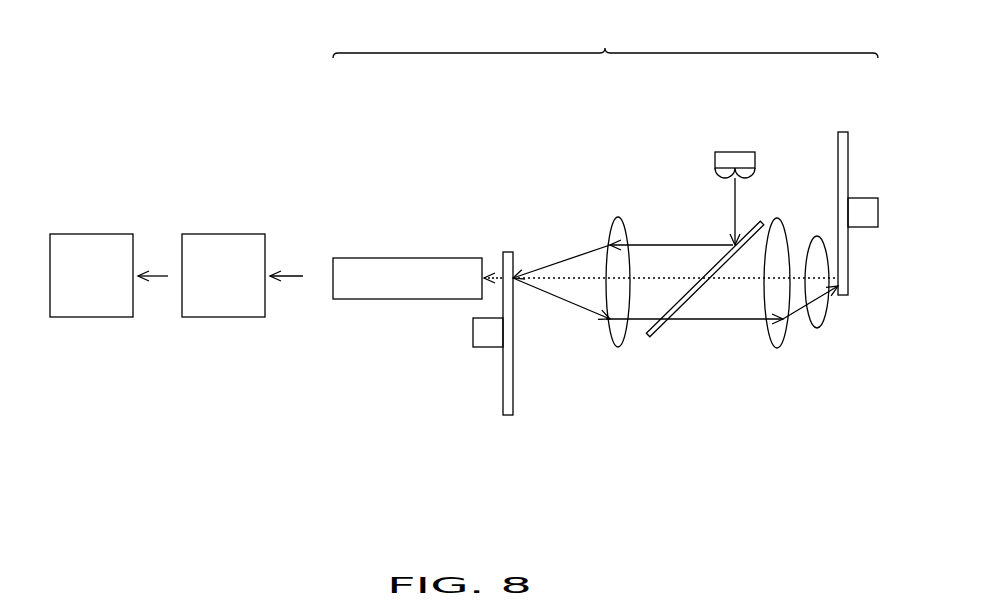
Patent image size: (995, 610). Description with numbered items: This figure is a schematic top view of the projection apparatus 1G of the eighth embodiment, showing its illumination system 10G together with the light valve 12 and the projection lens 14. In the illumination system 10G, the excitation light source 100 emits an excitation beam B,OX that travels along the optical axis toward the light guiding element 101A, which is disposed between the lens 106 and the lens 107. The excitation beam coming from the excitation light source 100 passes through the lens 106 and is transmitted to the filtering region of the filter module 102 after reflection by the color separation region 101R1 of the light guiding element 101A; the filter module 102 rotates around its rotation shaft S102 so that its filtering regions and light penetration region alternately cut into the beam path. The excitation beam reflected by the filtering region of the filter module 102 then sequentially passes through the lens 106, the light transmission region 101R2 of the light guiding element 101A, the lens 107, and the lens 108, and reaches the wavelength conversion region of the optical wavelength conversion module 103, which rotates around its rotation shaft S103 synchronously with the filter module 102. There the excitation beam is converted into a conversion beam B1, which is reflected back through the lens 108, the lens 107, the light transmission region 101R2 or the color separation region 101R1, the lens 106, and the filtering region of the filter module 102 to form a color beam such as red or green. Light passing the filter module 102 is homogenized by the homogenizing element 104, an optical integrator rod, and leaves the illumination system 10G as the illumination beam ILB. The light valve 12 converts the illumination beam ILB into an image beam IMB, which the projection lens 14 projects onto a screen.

The illumination system 10G is at (606, 252).
The projection apparatus 1G is at (787, 480).
The excitation light source 100 is at (735, 150).
The light guiding element 101A is at (766, 220).
The color separation region 101R1 is at (750, 227).
The light transmission region 101R2 is at (647, 325).
The filter module 102 is at (497, 383).
The rotation shaft S102 is at (487, 335).
The optical wavelength conversion module 103 is at (857, 268).
The rotation shaft S103 is at (866, 199).
The homogenizing element 104 is at (407, 268).
The lens 106 is at (618, 350).
The lens 107 is at (777, 350).
The lens 108 is at (817, 330).
The excitation beam B,OX is at (735, 205).
The conversion beam B1 is at (740, 283).
The light valve 12 is at (237, 286).
The projection lens 14 is at (103, 286).
The illumination beam ILB is at (285, 280).
The image beam IMB is at (150, 280).